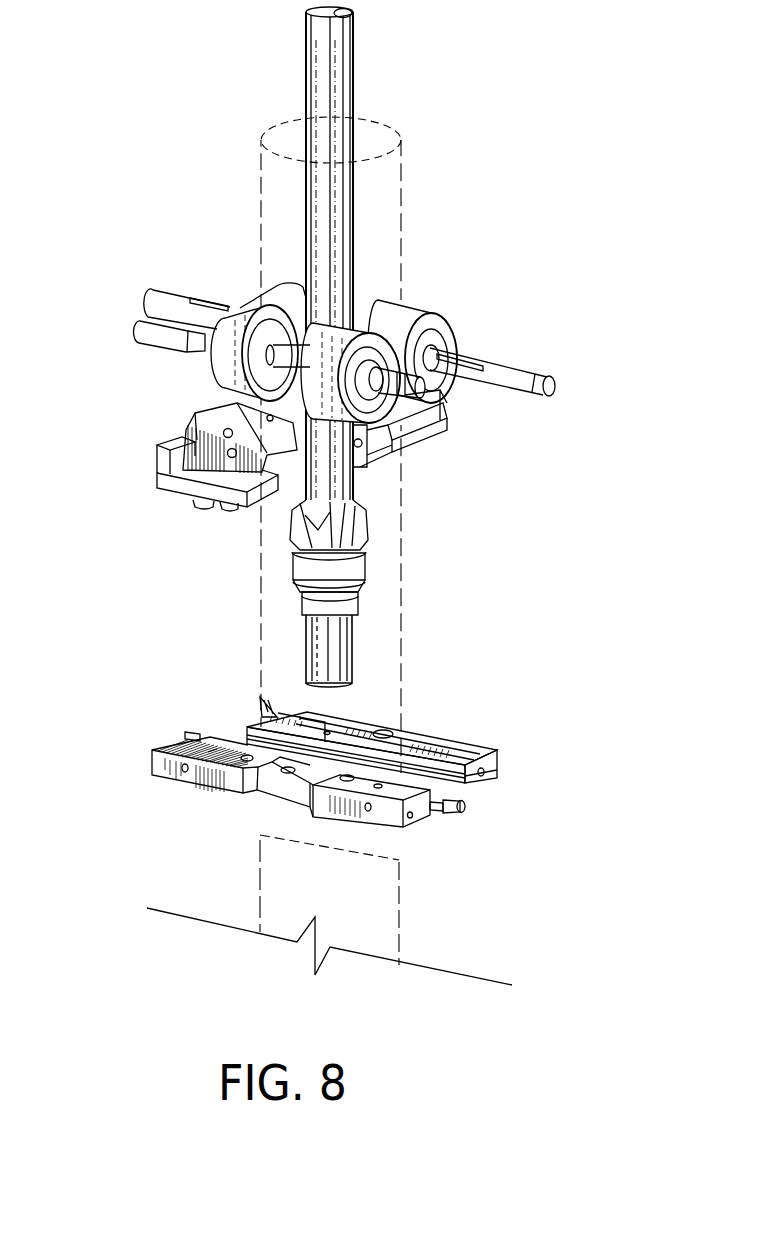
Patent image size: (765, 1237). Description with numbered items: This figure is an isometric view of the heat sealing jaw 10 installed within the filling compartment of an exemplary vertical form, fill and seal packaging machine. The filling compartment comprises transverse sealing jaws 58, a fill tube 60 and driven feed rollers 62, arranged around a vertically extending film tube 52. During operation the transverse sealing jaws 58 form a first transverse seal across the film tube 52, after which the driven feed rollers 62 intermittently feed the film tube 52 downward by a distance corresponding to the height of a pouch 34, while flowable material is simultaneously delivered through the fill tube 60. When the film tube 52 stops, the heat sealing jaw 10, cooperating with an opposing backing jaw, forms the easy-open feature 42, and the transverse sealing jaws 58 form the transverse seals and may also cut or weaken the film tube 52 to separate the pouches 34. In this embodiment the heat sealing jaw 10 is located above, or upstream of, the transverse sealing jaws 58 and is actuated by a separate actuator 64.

The heat sealing jaw 10 is at (171, 418).
The packaging pouch 34 is at (334, 898).
The easy-open feature 42 is at (240, 701).
The film tube 52 is at (375, 203).
The transverse sealing jaws 58 is at (448, 812).
The fill tube 60 is at (337, 642).
The driven feed rollers 62 is at (288, 301).
The actuator 64 is at (437, 420).